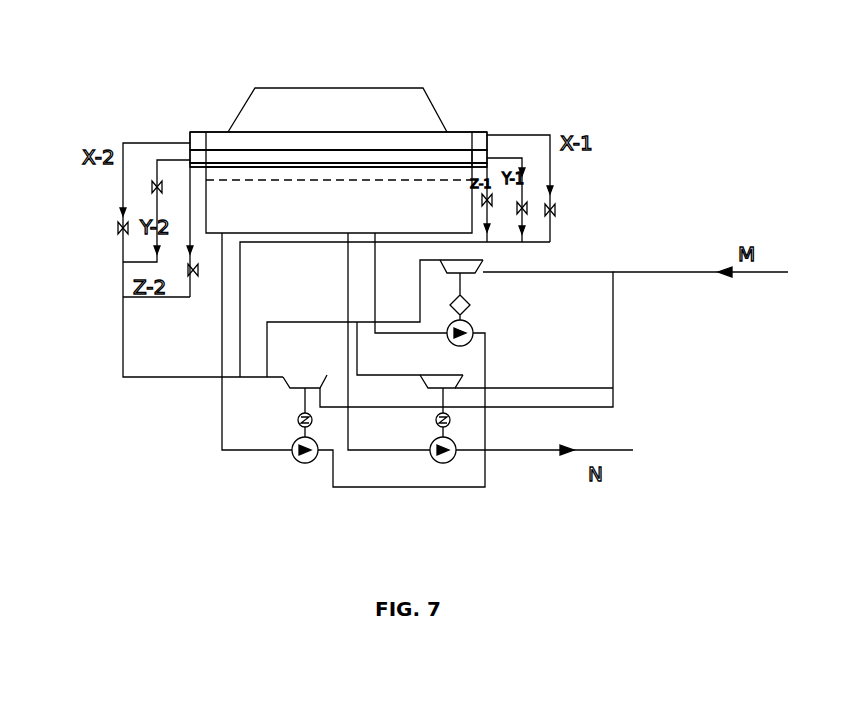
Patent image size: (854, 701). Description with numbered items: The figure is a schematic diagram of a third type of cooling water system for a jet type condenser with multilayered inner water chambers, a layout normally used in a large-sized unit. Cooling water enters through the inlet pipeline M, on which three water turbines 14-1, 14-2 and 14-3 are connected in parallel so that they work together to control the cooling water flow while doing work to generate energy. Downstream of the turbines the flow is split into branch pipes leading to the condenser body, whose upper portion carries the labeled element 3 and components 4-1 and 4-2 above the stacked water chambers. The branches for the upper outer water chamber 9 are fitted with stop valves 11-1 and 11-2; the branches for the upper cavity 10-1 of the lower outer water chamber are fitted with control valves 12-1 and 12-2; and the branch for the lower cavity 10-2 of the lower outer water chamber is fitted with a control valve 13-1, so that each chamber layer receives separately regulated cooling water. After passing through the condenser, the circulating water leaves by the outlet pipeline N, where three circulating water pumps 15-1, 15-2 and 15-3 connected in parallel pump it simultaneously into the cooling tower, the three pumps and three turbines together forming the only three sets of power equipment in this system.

The heat exchanger top cover 3 is at (288, 142).
The upper outer water chamber 9 is at (192, 138).
The upper cavity of the lower outer water chamber 10-1 is at (192, 150).
The lower cavity of the lower outer water chamber 10-2 is at (192, 163).
The first plate 4-1 is at (340, 153).
The second plate 4-2 is at (410, 167).
The stop valve 11-1 is at (553, 207).
The stop valve 11-2 is at (125, 233).
The control valve 12-1 is at (527, 212).
The control valve 12-2 is at (153, 185).
The control valve 13-1 is at (483, 194).
The water turbine 14-1 is at (473, 267).
The water turbine 14-2 is at (307, 383).
The water turbine 14-3 is at (455, 382).
The circulating water pump 15-1 is at (473, 327).
The circulating water pump 15-2 is at (305, 463).
The circulating water pump 15-3 is at (445, 463).